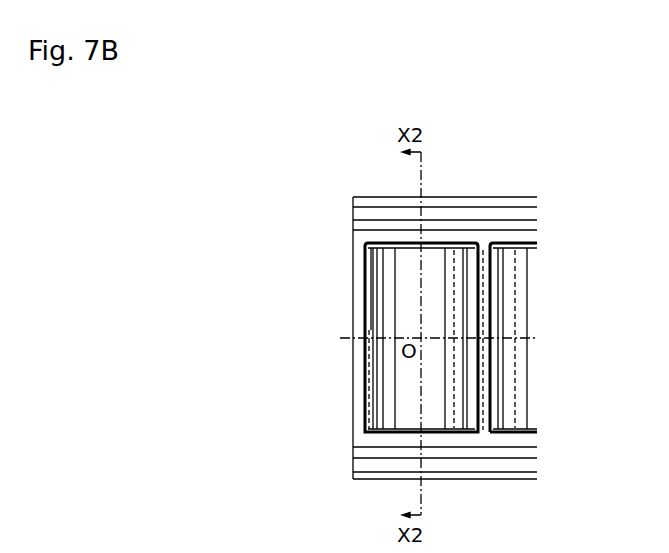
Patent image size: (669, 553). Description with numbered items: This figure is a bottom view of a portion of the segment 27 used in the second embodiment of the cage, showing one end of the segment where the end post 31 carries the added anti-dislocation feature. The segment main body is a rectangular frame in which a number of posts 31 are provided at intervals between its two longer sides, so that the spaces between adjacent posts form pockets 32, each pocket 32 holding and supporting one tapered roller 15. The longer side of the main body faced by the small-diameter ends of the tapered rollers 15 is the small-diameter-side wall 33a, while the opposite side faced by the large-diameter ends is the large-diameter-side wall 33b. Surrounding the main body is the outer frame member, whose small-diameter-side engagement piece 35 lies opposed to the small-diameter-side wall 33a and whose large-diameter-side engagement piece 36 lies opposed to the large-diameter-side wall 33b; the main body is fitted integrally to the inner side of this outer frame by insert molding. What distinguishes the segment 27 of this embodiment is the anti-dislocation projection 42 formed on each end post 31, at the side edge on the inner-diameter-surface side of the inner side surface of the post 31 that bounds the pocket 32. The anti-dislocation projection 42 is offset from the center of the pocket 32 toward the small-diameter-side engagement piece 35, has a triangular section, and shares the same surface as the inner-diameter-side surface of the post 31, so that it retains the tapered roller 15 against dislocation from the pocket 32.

The tapered roller 15 is at (378, 284).
The segment 27 is at (530, 195).
The post 31 is at (487, 320).
The pocket 32 is at (472, 393).
The small-diameter-side wall 33a is at (387, 441).
The large-diameter-side wall 33b is at (452, 240).
The small-diameter-side engagement piece 35 is at (524, 468).
The large-diameter-side engagement piece 36 is at (503, 200).
The anti-dislocation projection 42 is at (368, 358).